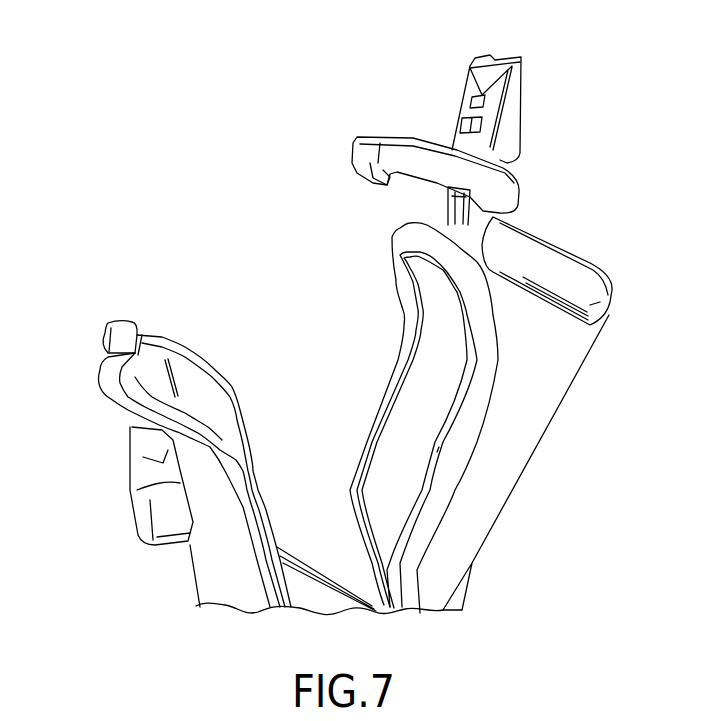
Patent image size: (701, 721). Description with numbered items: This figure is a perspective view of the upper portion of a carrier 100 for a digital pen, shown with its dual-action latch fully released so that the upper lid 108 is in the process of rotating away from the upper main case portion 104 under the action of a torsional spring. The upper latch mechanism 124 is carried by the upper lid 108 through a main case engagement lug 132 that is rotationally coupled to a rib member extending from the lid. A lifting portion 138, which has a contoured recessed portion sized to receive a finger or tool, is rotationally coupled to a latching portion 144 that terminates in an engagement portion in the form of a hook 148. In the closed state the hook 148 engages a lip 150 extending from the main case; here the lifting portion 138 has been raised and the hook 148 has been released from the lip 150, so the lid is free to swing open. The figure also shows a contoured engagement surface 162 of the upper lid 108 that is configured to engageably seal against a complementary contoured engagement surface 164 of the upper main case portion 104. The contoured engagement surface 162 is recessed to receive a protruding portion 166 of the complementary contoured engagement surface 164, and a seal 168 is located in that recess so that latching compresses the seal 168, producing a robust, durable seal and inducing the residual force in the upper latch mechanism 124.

The carrier 100 is at (192, 151).
The upper main case portion 104 is at (193, 580).
The upper lid 108 is at (560, 410).
The upper latch mechanism 124 is at (416, 103).
The main case engagement lug 132 is at (497, 216).
The lifting portion 138 is at (520, 122).
The latching portion 144 is at (410, 137).
The hook 148 is at (376, 186).
The lip 150 is at (100, 343).
The contoured engagement surface 162 is at (396, 344).
The complementary contoured engagement surface 164 is at (179, 340).
The protruding portion 166 is at (220, 379).
The seal 168 is at (438, 450).